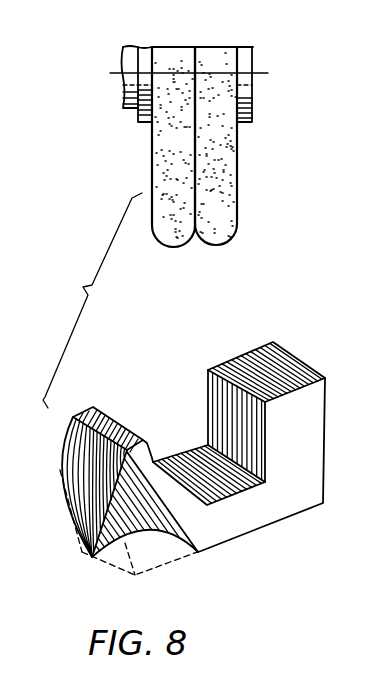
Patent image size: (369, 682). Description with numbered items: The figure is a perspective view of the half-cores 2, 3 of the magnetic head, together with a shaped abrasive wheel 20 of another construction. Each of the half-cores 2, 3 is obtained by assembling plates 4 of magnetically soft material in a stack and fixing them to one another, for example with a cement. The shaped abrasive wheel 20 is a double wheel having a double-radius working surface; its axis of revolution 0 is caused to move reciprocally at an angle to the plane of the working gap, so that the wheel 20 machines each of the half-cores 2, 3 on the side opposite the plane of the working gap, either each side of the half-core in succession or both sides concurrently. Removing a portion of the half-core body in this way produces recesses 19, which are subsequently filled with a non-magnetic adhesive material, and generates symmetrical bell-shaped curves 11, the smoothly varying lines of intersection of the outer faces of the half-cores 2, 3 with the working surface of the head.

The axis of revolution 0 is at (268, 73).
The shaped abrasive wheel 20 is at (228, 167).
The plates 4 is at (76, 434).
The half-core 2 is at (88, 465).
The half-core 3 is at (120, 504).
The bell-shaped curves 11 is at (77, 513).
The recesses 19 is at (163, 561).